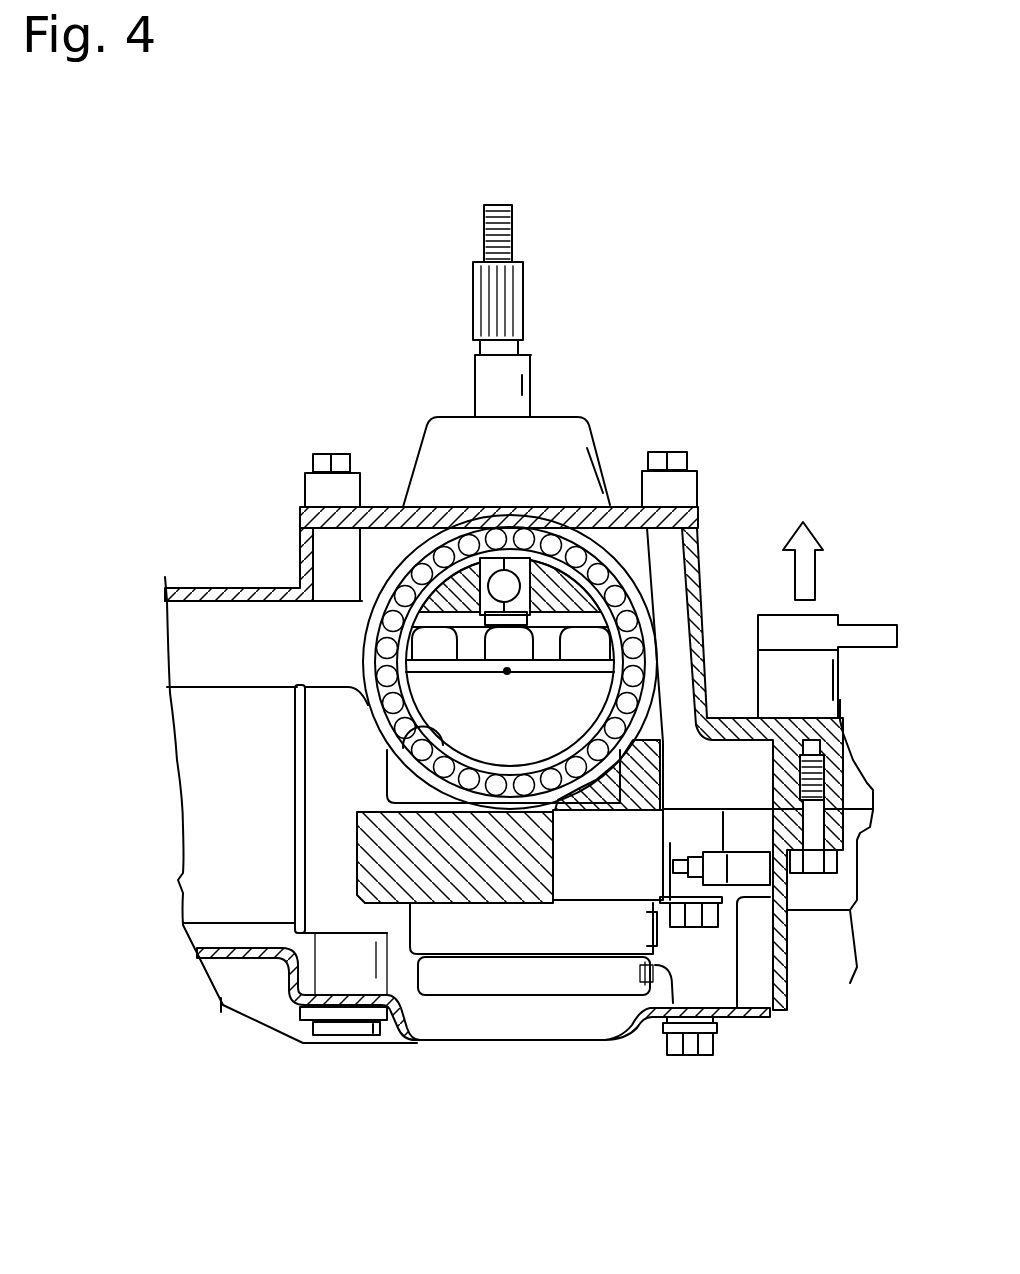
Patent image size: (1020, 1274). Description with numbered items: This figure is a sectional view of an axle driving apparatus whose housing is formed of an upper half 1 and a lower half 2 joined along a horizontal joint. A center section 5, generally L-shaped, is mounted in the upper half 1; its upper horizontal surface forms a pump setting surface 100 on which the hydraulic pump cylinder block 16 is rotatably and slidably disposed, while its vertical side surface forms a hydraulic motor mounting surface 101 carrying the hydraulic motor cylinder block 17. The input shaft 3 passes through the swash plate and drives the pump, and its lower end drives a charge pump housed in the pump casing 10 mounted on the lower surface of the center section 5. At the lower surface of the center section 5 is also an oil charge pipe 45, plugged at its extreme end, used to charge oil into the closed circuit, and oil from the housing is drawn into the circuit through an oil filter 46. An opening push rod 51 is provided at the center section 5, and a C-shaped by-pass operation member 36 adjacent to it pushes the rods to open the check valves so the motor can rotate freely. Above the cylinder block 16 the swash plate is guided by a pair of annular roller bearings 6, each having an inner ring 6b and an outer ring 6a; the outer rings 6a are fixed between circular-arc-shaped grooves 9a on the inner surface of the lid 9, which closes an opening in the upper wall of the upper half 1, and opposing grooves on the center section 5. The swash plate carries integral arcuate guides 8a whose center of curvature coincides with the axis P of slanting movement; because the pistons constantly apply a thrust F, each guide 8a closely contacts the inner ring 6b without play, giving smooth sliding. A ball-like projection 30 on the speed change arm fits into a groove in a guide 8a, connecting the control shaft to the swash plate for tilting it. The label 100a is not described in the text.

The upper half 1 is at (702, 587).
The lower half 2 is at (855, 912).
The input shaft 3 is at (522, 314).
The center section 5 is at (355, 851).
The annular roller bearings 6 is at (335, 650).
The outer ring 6a is at (400, 533).
The inner ring 6b is at (387, 735).
The guides 8a is at (450, 602).
The lid 9 is at (592, 446).
The circular-arc-shaped grooves 9a is at (487, 525).
The pump casing 10 is at (662, 1012).
The cylinder block 16 is at (510, 662).
The cylinder block 17 is at (203, 751).
The projection 30 is at (510, 573).
The by-pass operation member 36 is at (788, 912).
The oil charge pipe 45 is at (360, 1030).
The oil filter 46 is at (600, 1000).
The opening push rod 51 is at (773, 900).
The pump setting surface 100 is at (597, 812).
The lower block 100a is at (520, 795).
The hydraulic motor mounting surface 101 is at (295, 733).
The axis of slanting movement P is at (510, 673).
The thrust F is at (821, 561).